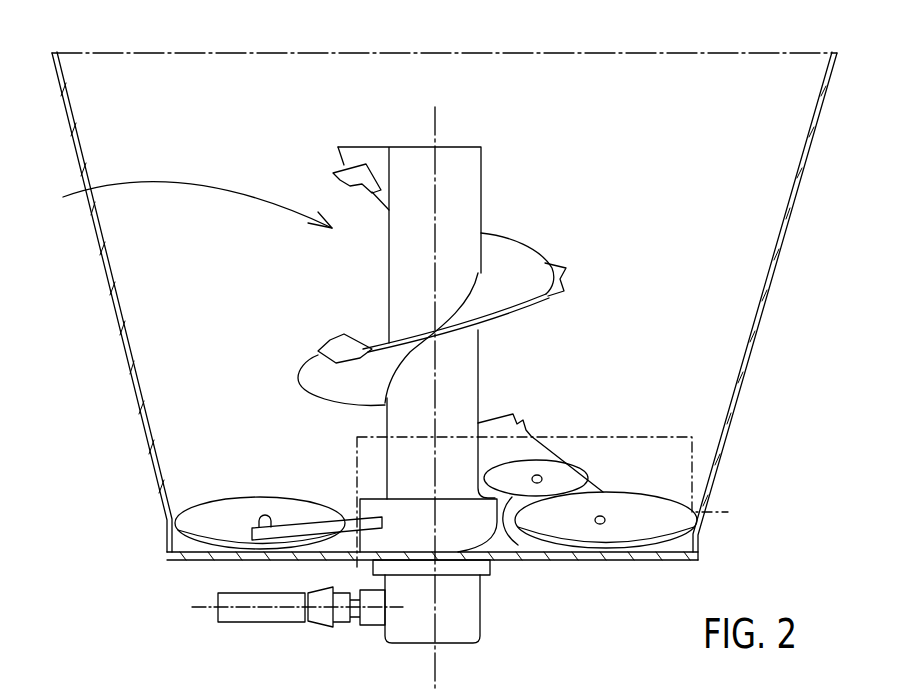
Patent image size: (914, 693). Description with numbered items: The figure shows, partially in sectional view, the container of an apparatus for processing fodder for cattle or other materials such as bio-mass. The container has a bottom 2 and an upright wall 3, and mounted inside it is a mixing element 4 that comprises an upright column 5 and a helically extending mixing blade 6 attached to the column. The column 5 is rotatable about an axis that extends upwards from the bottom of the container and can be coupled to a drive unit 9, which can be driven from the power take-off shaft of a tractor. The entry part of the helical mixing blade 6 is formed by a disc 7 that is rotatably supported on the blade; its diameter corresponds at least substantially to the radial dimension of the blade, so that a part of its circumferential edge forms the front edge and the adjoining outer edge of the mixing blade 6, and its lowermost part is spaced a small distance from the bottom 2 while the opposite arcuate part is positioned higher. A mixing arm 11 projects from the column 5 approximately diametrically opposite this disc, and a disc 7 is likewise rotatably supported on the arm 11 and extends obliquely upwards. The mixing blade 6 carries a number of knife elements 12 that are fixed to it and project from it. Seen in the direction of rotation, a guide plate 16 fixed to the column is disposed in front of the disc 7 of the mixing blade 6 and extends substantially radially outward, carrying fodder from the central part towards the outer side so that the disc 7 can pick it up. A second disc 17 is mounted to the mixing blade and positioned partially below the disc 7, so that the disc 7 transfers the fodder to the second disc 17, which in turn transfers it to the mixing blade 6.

The bottom 2 is at (642, 558).
The upright wall 3 is at (817, 115).
The mixing element 4 is at (178, 204).
The upright column 5 is at (459, 178).
The helically extending mixing blade 6 is at (512, 272).
The disc 7 is at (220, 517).
The drive unit 9 is at (455, 633).
The mixing arm 11 is at (290, 528).
The knife elements 12 is at (337, 352).
The guide plate 16 is at (495, 535).
The second disc 17 is at (568, 480).